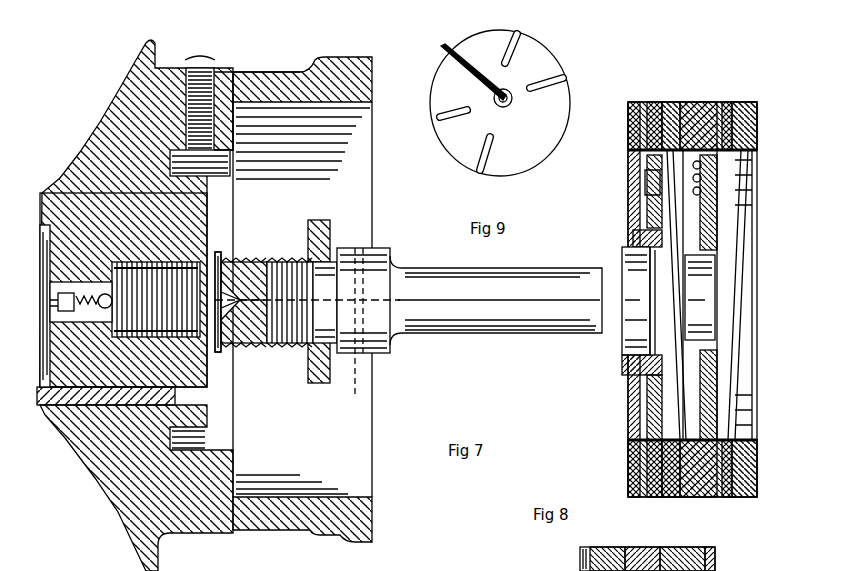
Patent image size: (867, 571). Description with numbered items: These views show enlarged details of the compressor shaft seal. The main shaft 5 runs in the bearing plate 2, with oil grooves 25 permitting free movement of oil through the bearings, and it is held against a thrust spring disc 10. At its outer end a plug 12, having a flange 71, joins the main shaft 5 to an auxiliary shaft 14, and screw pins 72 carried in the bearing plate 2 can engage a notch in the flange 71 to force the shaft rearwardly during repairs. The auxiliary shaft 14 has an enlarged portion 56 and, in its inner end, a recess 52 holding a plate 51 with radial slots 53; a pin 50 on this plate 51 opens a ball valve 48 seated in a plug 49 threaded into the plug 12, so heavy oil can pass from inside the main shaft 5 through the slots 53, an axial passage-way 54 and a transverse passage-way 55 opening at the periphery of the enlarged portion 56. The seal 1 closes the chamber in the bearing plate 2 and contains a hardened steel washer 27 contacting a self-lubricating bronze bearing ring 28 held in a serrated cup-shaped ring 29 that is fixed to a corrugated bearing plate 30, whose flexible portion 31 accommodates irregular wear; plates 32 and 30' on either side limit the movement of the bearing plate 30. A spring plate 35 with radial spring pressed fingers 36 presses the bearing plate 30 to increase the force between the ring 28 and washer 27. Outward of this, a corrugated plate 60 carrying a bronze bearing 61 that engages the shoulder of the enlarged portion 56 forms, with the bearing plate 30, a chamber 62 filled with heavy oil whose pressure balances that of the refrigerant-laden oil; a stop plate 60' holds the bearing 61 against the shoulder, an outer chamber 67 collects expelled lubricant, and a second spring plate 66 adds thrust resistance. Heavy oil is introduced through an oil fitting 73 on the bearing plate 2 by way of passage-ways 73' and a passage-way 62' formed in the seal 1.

In FIG. 8, the seal 1 is at (750, 103).
In FIG. 7, the bearing plate 2 is at (347, 80).
In FIG. 7, the main shaft 5 is at (43, 405).
In FIG. 7, the spring disc 10 is at (208, 556).
In FIG. 7, the plug 12 is at (192, 412).
In FIG. 7, the auxiliary shaft 14 is at (455, 313).
In FIG. 7, the oil grooves 25 is at (72, 190).
In FIG. 7, the washer 27 is at (312, 383).
In FIG. 8, the bearing ring 28 is at (622, 372).
In FIG. 8, the cup-shaped ring 29 is at (628, 388).
In FIG. 8, the bearing plate 30 is at (651, 304).
In FIG. 8, the plate 30' is at (672, 317).
In FIG. 8, the flexible portion 31 is at (638, 422).
In FIG. 8, the plate 32 is at (632, 103).
In FIG. 8, the spring plate 35 is at (683, 115).
In FIG. 8, the spring pressed fingers 36 is at (673, 310).
In FIG. 7, the ball valve 48 is at (83, 405).
In FIG. 7, the plug 49 is at (62, 405).
In FIG. 7, the pin 50 is at (216, 296).
In FIG. 9, the pin 50 is at (460, 63).
In FIG. 7, the plate 51 is at (233, 267).
In FIG. 9, the plate 51 is at (513, 130).
In FIG. 7, the recess 52 is at (257, 258).
In FIG. 7, the slots 53 is at (232, 345).
In FIG. 9, the slots 53 is at (495, 155).
In FIG. 7, the passage-way 54 is at (262, 333).
In FIG. 7, the passage-way 55 is at (307, 331).
In FIG. 7, the enlarged portion 56 is at (385, 338).
In FIG. 8, the plate 60 is at (761, 299).
In FIG. 8, the stop plate 60' is at (736, 316).
In FIG. 8, the bronze bearing 61 is at (727, 345).
In FIG. 8, the chamber 62 is at (698, 343).
In FIG. 8, the passage-way 62' is at (611, 179).
In FIG. 8, the spring plate 66 is at (747, 395).
In FIG. 8, the outer chamber 67 is at (740, 423).
In FIG. 7, the flange 71 is at (200, 413).
In FIG. 7, the screw pin 72 is at (207, 90).
In FIG. 7, the oil fitting 73 is at (240, 90).
In FIG. 7, the passage-ways 73' is at (267, 60).